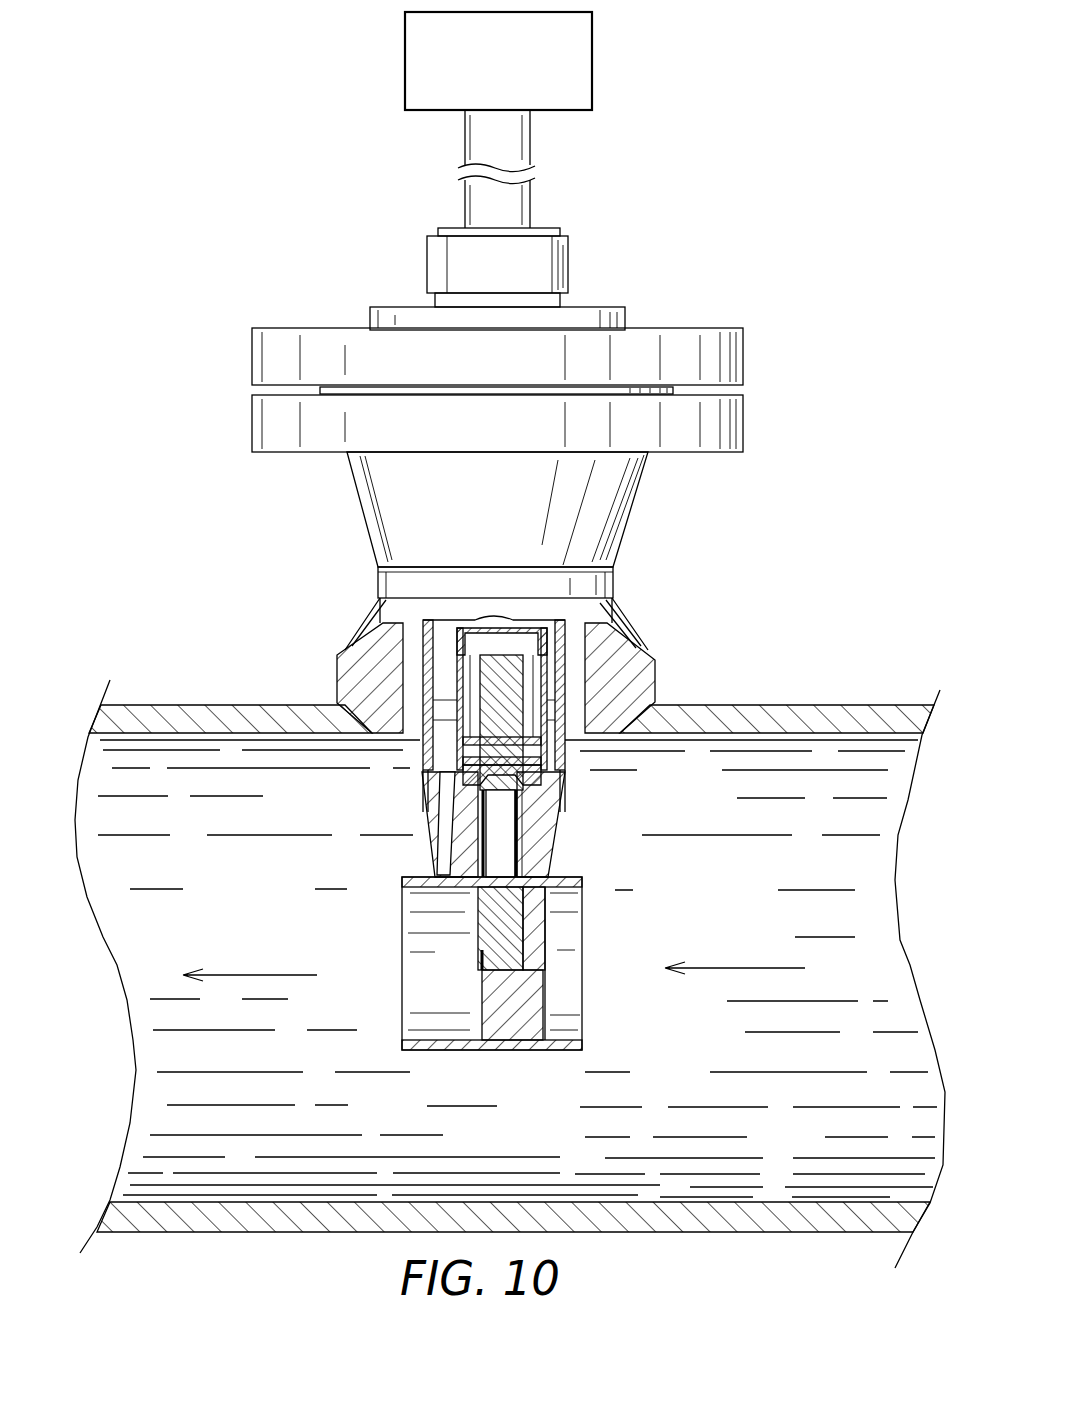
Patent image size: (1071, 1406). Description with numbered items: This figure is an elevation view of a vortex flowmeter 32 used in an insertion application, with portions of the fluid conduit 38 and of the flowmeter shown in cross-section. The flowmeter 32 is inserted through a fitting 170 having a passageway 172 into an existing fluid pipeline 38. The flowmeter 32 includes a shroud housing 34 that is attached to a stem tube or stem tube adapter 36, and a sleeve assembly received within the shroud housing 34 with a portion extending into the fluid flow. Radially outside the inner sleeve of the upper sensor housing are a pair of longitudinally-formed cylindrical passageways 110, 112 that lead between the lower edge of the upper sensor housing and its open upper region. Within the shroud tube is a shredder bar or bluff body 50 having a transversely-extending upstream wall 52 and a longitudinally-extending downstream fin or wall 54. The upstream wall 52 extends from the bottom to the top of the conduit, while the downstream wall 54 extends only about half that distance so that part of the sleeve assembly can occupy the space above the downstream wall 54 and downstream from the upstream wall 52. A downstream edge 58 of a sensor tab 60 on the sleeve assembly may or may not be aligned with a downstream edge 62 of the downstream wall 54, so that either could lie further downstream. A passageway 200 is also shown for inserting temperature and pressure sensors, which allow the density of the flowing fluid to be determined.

The fitting 170 is at (220, 415).
The cylindrical passageway 110 is at (457, 670).
The passageway 172 is at (420, 700).
The cylindrical passageway 112 is at (533, 670).
The stem tube adapter 36 is at (563, 710).
The passageway 200 is at (445, 815).
The shroud housing 34 is at (593, 840).
The flowmeter 32 is at (353, 868).
The downstream edge 58 is at (490, 948).
The sensor tab 60 is at (482, 950).
The downstream edge 62 is at (455, 1045).
The downstream wall 54 is at (520, 1030).
The bluff body 50 is at (567, 973).
The upstream wall 52 is at (582, 1015).
The fluid conduit 38 is at (800, 1118).